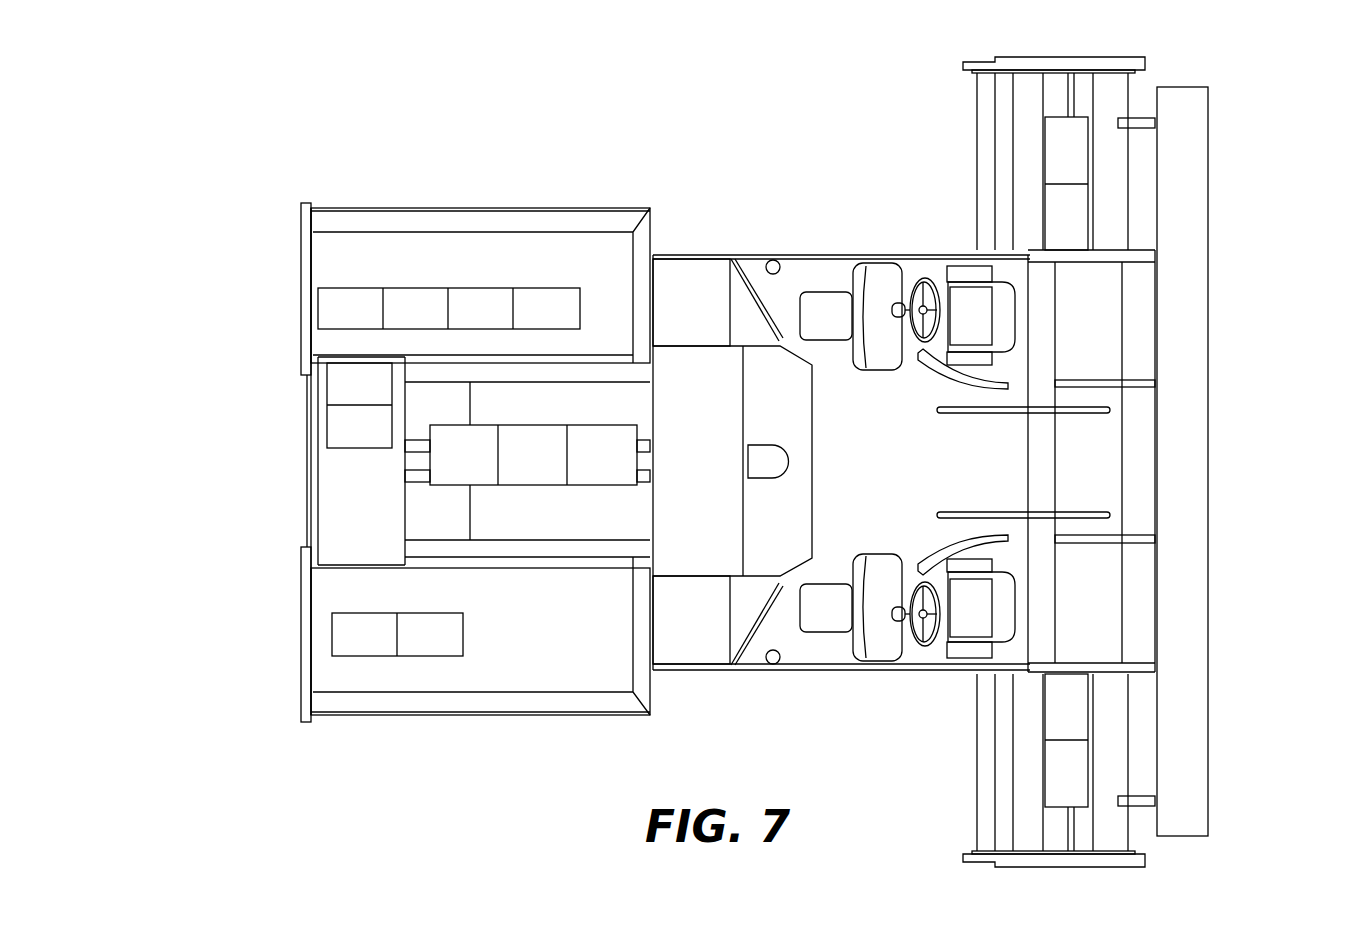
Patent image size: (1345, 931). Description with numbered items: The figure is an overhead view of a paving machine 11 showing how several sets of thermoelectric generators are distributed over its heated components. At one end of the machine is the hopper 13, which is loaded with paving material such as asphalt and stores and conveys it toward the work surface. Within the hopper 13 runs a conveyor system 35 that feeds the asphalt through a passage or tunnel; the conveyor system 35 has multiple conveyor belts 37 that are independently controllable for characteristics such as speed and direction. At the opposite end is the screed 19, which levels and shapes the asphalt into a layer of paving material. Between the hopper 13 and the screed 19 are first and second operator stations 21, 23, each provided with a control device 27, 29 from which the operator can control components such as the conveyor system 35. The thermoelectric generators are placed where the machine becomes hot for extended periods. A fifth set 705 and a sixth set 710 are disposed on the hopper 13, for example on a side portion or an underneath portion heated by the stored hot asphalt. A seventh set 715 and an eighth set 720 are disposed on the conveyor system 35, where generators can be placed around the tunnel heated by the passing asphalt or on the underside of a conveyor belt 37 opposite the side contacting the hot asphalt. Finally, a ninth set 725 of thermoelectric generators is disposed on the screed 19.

The paving machine 11 is at (575, 122).
The hopper 13 is at (395, 245).
The screed 19 is at (1113, 778).
The first operator station 21 is at (937, 235).
The second operator station 23 is at (938, 690).
The control device 27 is at (888, 272).
The control device 29 is at (878, 637).
The conveyor system 35 is at (413, 460).
The conveyor belt 37 is at (496, 530).
The fifth set of thermoelectric generators 705 is at (330, 298).
The sixth set of thermoelectric generators 710 is at (340, 634).
The seventh set of thermoelectric generators 715 is at (335, 423).
The eighth set of thermoelectric generators 720 is at (455, 477).
The ninth set of thermoelectric generators 725 is at (1067, 147).